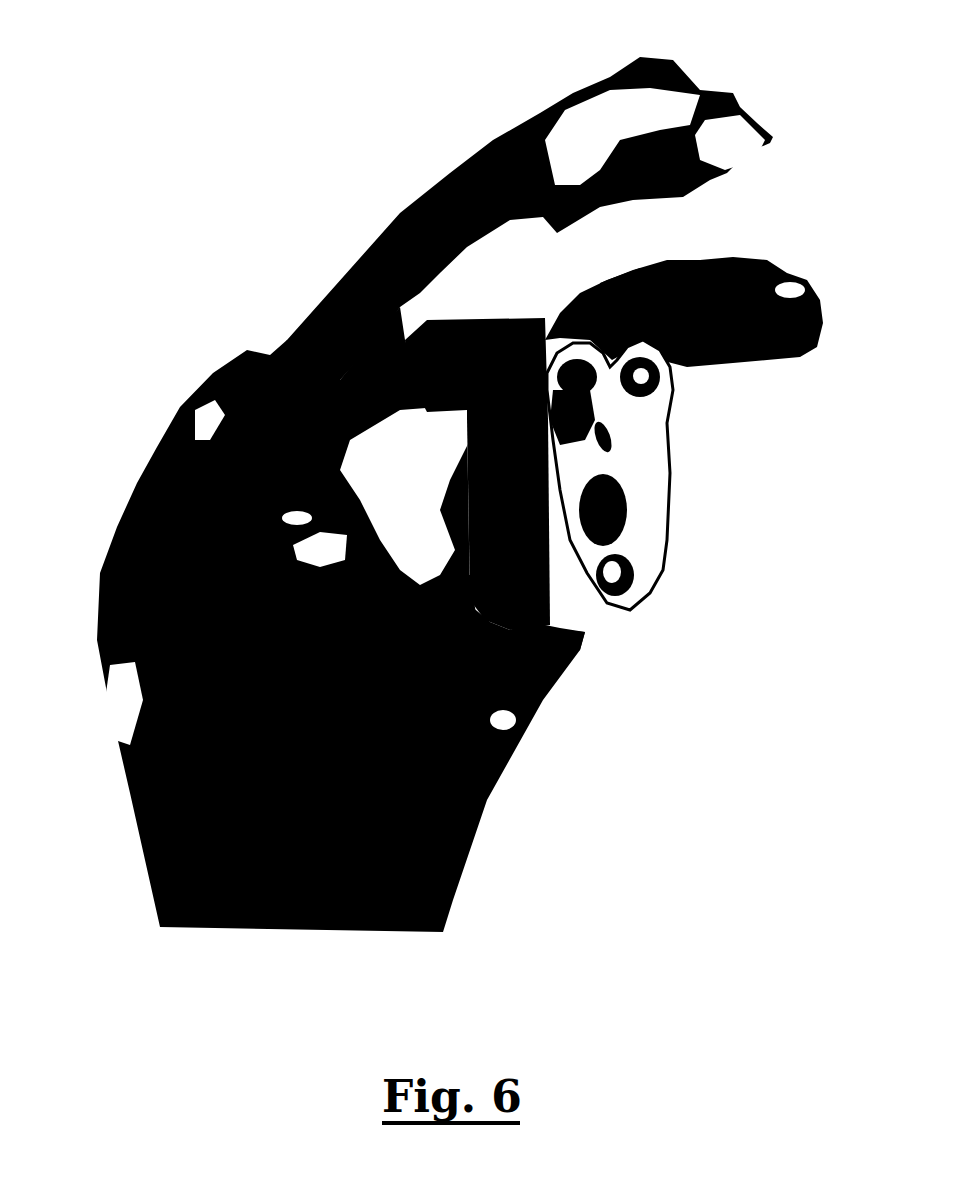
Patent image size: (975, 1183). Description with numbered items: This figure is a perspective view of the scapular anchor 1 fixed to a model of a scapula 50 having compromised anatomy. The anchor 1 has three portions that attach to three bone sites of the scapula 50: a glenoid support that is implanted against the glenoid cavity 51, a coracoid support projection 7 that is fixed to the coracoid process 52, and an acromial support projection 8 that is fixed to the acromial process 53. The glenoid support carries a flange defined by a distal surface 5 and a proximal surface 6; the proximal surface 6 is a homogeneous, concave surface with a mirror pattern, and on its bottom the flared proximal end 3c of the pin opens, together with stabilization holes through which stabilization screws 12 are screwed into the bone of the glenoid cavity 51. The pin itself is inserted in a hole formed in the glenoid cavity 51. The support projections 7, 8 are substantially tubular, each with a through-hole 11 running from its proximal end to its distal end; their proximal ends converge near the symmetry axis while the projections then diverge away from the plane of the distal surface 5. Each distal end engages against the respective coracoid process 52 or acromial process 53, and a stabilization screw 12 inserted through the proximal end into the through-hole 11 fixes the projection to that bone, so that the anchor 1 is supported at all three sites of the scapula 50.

The anchor 1 is at (629, 471).
The flared proximal end 3c is at (603, 520).
The distal surface 5 is at (467, 570).
The proximal surface 6 is at (640, 487).
The coracoid support projection 7 is at (620, 325).
The acromial support projection 8 is at (474, 320).
The through-hole 11 is at (577, 400).
The stabilization screw 12 is at (653, 383).
The scapula 50 is at (113, 355).
The glenoid cavity 51 is at (533, 640).
The coracoid process 52 is at (785, 303).
The acromial process 53 is at (550, 178).